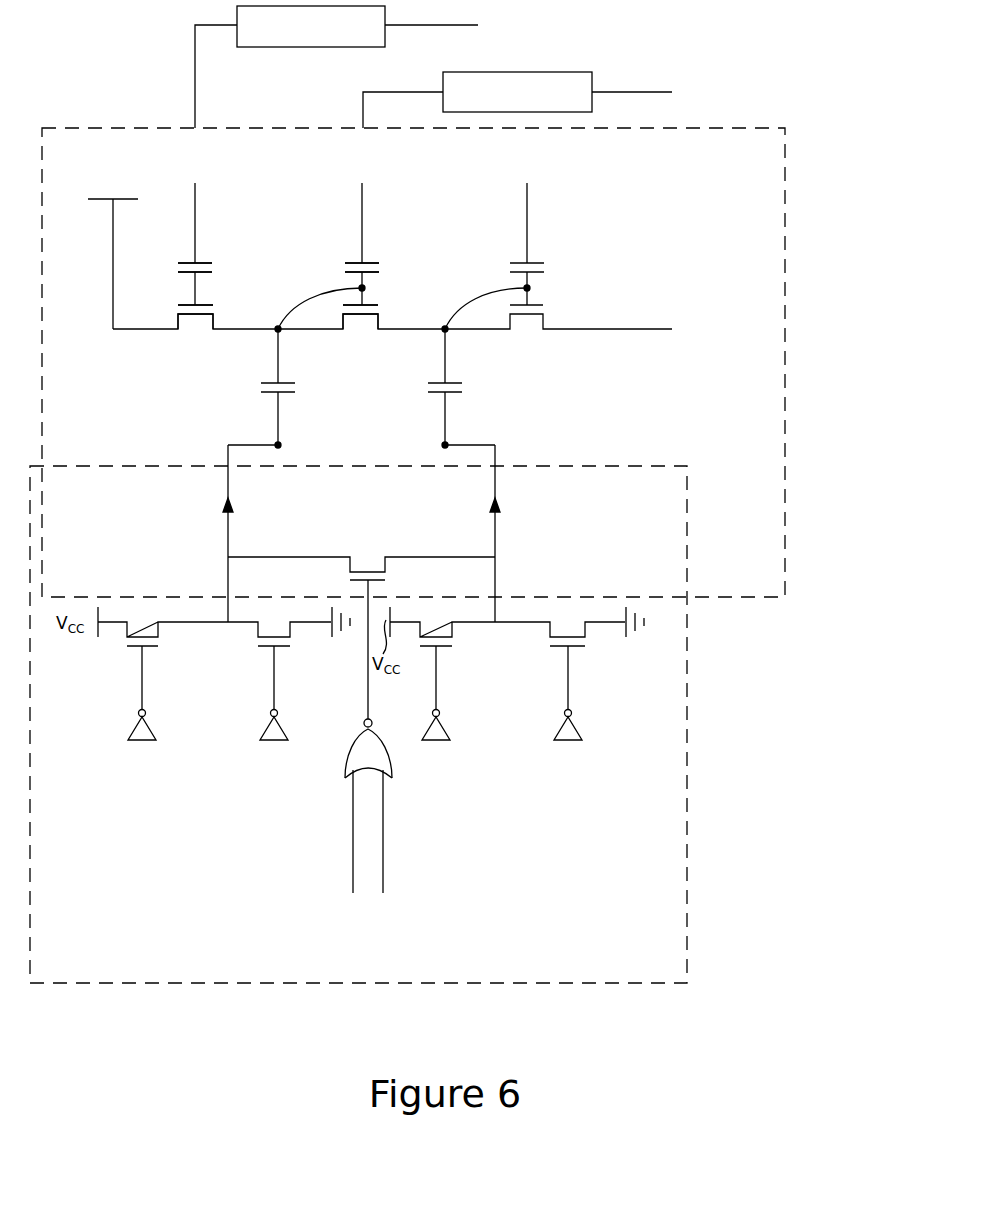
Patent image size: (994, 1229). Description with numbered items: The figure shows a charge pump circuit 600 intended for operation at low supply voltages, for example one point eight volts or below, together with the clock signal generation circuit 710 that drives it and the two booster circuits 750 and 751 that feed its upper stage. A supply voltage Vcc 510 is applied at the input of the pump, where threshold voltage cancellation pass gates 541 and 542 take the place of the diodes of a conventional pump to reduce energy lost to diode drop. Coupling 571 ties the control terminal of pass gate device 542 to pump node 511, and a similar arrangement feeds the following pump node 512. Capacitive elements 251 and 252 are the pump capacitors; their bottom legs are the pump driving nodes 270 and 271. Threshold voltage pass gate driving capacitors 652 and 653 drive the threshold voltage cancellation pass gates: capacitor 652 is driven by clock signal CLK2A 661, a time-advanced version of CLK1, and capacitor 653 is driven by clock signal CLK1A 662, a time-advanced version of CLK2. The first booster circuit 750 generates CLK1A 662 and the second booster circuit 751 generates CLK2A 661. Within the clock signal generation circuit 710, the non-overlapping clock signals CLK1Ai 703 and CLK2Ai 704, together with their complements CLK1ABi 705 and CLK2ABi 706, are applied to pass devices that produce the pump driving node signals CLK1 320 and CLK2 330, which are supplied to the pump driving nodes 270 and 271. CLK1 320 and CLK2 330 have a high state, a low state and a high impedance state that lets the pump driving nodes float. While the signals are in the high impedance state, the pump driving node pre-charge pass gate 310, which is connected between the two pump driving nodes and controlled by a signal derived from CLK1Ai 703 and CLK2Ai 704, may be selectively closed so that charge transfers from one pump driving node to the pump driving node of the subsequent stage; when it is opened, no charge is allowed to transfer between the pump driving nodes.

The second booster circuit 751 is at (336, 67).
The first booster circuit 750 is at (517, 100).
The supply voltage Vcc 510 is at (97, 172).
The clock signal CLK2A 661 is at (361, 224).
The clock signal CLK1A 662 is at (362, 224).
The threshold voltage pass gate driving capacitor 652 is at (218, 268).
The threshold voltage pass gate driving capacitor 653 is at (384, 268).
The threshold voltage cancellation pass gate 541 is at (192, 336).
The threshold voltage cancellation pass gate 542 is at (357, 336).
The coupling 571 is at (320, 286).
The pump node 511 is at (277, 321).
The pump node 512 is at (444, 321).
The capacitive element 251 is at (256, 387).
The capacitive element 252 is at (468, 387).
The pump driving node 270 is at (270, 441).
The pump driving node 271 is at (454, 441).
The clock signal CLK1 320 is at (220, 540).
The clock signal CLK2 330 is at (504, 541).
The pump driving node pre-charge pass gate 310 is at (366, 548).
The charge pump circuit 600 is at (787, 458).
The clock signal generation circuit 710 is at (694, 813).
The clock signal CLK1Ai 703 is at (445, 481).
The signal CLK2ABi 706 is at (272, 720).
The clock signal CLK2Ai 704 is at (425, 796).
The signal CLK1ABi 705 is at (576, 720).